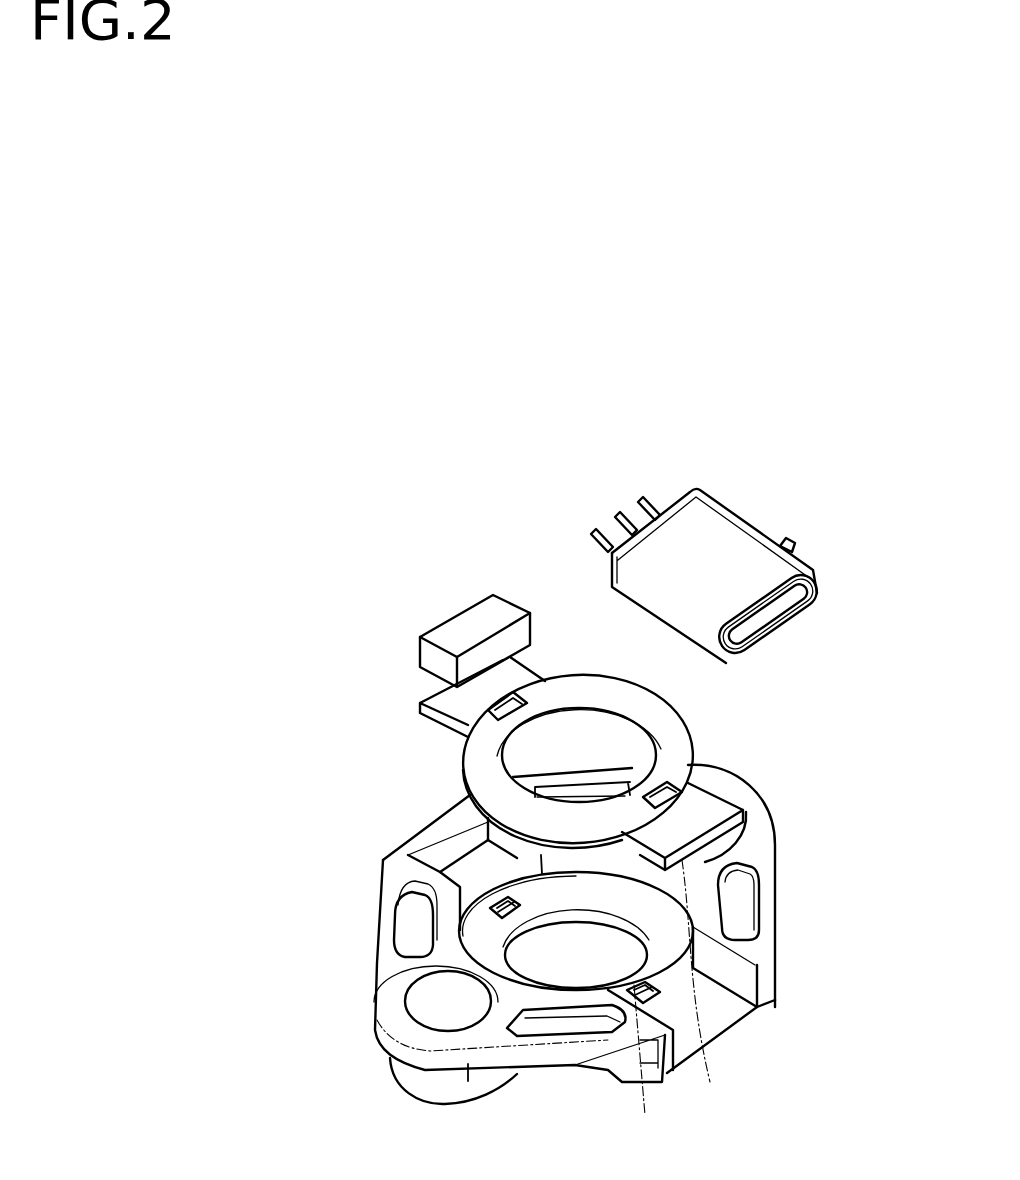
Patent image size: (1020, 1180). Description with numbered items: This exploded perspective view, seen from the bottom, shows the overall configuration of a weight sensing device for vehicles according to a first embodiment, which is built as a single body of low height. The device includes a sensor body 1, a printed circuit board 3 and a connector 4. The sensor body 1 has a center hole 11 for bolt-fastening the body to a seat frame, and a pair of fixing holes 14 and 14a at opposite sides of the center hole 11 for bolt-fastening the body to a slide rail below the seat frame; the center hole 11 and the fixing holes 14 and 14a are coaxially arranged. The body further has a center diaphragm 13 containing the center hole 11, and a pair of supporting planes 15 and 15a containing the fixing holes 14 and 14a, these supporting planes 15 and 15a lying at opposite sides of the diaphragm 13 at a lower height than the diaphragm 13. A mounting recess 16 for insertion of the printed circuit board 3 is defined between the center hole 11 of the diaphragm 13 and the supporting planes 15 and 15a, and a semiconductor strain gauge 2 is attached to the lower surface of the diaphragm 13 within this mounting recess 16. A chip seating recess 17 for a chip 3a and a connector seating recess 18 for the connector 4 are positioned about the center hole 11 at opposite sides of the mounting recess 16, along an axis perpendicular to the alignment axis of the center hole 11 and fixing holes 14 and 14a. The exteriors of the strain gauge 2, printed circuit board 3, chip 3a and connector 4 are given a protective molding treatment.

The sensor body 1 is at (607, 935).
The semiconductor strain gauge 2 is at (640, 1095).
The printed circuit board 3 is at (672, 716).
The chip 3a is at (462, 617).
The connector 4 is at (738, 535).
The center hole 11 is at (542, 946).
The center diaphragm 13 is at (680, 995).
The fixing hole 14 is at (430, 990).
The fixing hole 14a is at (777, 803).
The supporting plane 15 is at (468, 1081).
The supporting plane 15a is at (780, 860).
The mounting recess 16 is at (672, 935).
The chip seating recess 17 is at (480, 826).
The connector seating recess 18 is at (724, 1008).